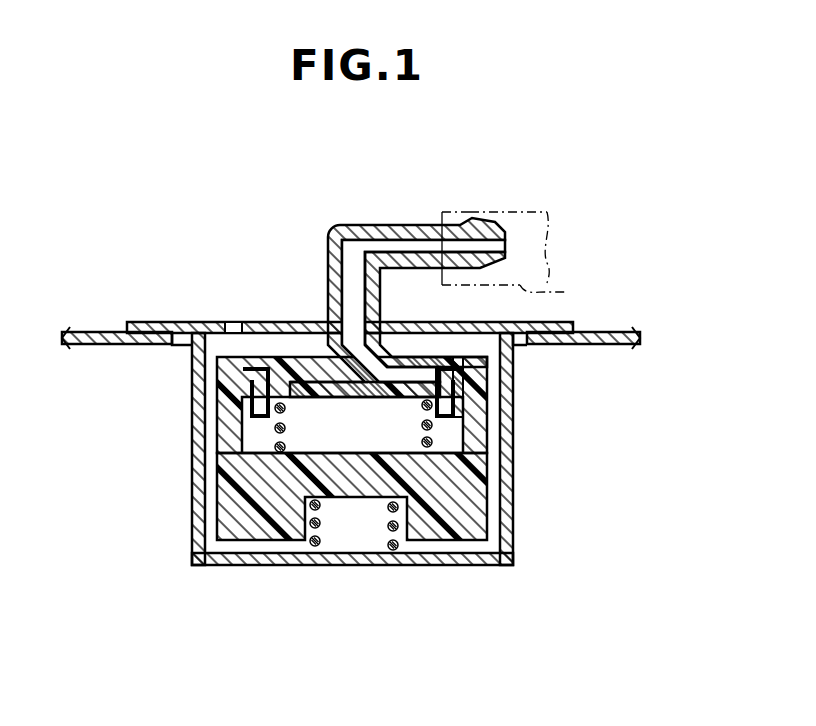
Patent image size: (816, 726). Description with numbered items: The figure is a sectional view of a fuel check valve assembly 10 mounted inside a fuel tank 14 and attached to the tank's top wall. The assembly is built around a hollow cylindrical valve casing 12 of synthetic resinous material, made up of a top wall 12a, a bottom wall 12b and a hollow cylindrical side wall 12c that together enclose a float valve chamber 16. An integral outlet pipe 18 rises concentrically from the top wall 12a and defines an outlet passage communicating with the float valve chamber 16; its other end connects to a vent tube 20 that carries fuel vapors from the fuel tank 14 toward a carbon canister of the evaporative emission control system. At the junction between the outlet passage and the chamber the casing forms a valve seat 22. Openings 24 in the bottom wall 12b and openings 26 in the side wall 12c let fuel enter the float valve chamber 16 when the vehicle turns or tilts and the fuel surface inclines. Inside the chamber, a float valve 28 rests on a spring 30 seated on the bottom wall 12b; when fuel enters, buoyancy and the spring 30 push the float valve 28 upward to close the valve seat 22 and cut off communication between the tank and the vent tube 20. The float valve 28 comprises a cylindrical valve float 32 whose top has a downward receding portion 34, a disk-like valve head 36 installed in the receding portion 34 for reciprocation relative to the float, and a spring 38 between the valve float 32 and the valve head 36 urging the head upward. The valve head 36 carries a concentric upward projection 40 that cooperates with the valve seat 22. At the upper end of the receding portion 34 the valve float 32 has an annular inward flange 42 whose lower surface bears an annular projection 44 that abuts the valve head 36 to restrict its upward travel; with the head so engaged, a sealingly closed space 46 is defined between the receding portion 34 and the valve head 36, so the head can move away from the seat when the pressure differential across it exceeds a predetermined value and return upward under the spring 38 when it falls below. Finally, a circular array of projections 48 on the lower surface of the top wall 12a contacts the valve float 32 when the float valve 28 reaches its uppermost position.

The fuel check valve assembly 10 is at (427, 194).
The valve casing 12 is at (212, 318).
The top wall 12a is at (272, 320).
The bottom wall 12b is at (302, 568).
The side wall 12c is at (192, 515).
The fuel tank 14 is at (610, 330).
The float valve chamber 16 is at (218, 388).
The outlet pipe 18 is at (493, 232).
The vent tube 20 is at (563, 289).
The valve seat 22 is at (338, 320).
The openings 24 is at (280, 567).
The openings 26 is at (195, 352).
The float valve 28 is at (497, 528).
The spring 30 is at (382, 567).
The valve float 32 is at (488, 492).
The receding portion 34 is at (258, 445).
The valve head 36 is at (457, 360).
The spring 38 is at (432, 440).
The upward projection 40 is at (387, 318).
The annular inward flange 42 is at (466, 385).
The annular projection 44 is at (250, 415).
The sealingly closed space 46 is at (354, 432).
The projections 48 is at (253, 320).